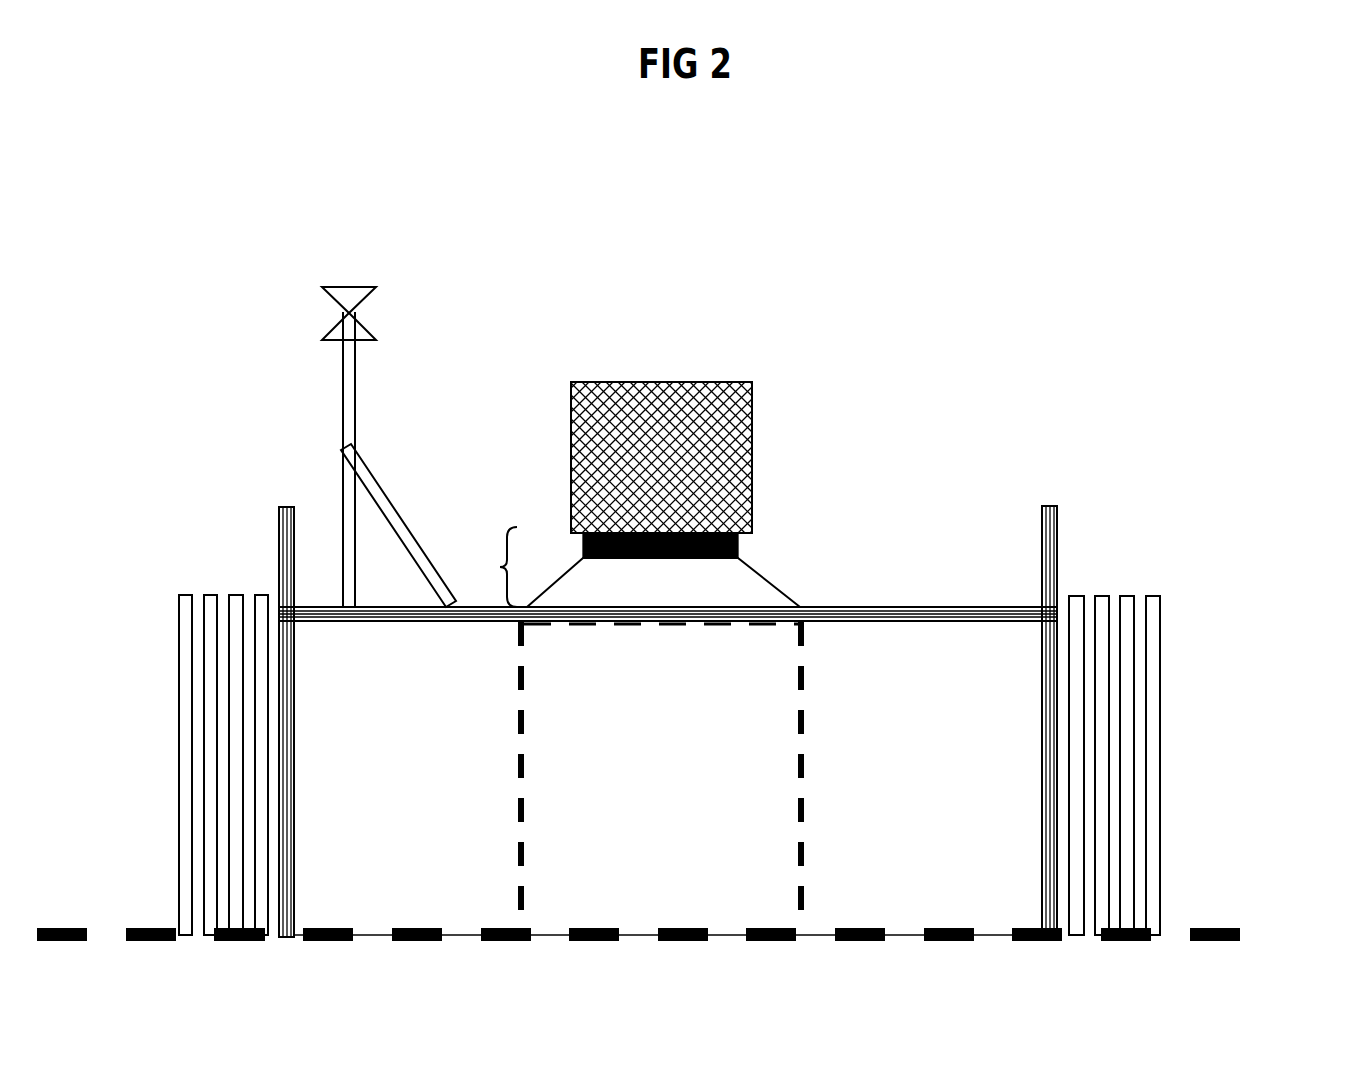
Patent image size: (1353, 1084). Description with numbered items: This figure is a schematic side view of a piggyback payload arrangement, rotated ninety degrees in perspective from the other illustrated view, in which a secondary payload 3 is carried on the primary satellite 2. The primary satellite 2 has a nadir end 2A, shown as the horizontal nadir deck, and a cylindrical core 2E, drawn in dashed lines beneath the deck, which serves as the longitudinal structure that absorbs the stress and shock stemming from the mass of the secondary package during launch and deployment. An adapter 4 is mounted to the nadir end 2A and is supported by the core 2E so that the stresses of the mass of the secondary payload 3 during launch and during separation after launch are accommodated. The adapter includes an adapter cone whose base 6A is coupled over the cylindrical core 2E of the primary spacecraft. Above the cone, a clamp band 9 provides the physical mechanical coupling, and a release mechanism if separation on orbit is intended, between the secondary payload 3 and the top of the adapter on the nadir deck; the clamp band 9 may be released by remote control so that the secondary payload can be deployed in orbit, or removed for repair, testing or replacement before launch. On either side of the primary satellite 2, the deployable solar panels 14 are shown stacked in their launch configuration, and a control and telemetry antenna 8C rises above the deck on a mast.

The primary satellite 2 is at (944, 682).
The nadir end 2A is at (917, 589).
The core 2E is at (819, 764).
The secondary payload 3 is at (710, 441).
The adapter 4 is at (429, 525).
The base of the cone 6A is at (780, 574).
The telemetry antennae 8C is at (388, 302).
The clamp band 9 is at (754, 536).
The deployable solar panels 14 is at (1131, 664).